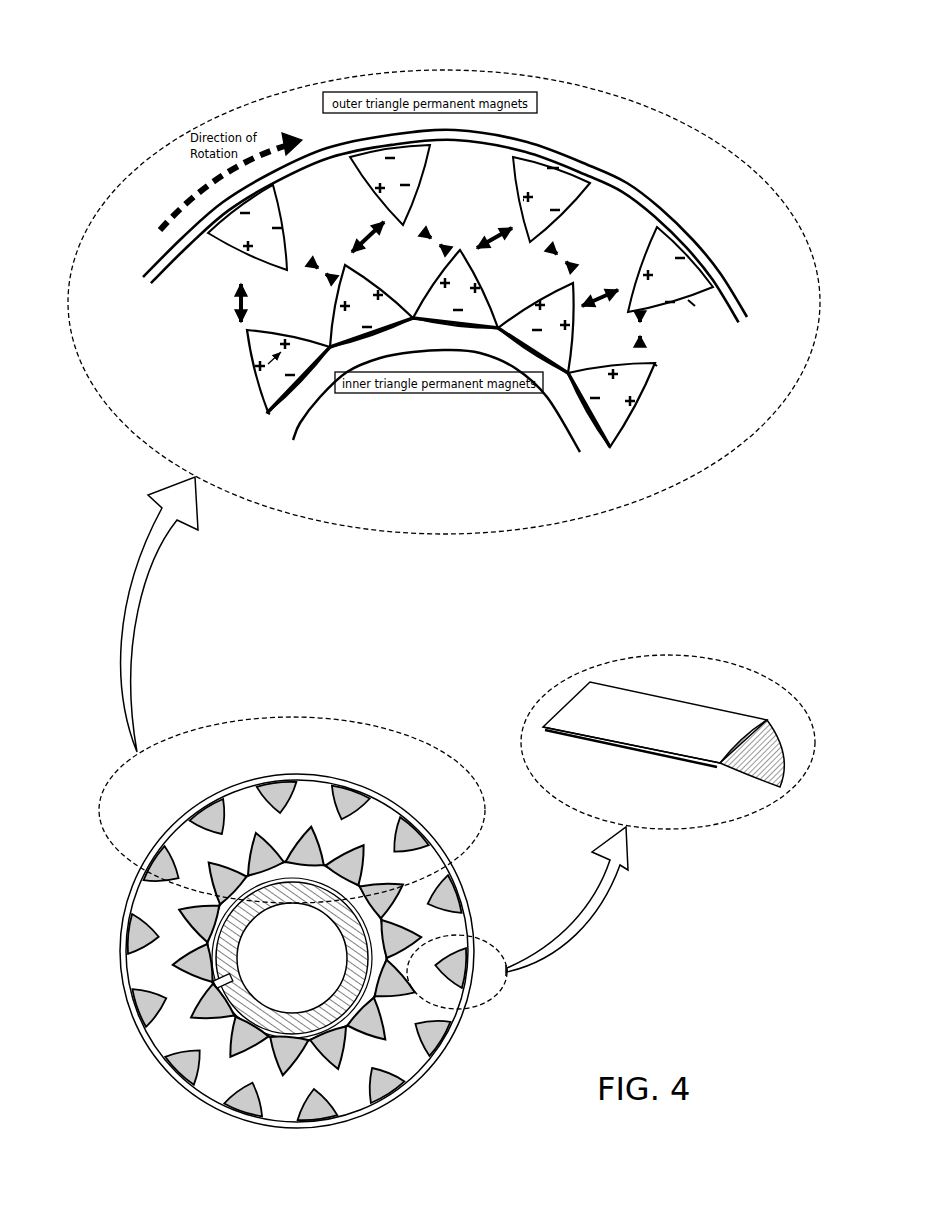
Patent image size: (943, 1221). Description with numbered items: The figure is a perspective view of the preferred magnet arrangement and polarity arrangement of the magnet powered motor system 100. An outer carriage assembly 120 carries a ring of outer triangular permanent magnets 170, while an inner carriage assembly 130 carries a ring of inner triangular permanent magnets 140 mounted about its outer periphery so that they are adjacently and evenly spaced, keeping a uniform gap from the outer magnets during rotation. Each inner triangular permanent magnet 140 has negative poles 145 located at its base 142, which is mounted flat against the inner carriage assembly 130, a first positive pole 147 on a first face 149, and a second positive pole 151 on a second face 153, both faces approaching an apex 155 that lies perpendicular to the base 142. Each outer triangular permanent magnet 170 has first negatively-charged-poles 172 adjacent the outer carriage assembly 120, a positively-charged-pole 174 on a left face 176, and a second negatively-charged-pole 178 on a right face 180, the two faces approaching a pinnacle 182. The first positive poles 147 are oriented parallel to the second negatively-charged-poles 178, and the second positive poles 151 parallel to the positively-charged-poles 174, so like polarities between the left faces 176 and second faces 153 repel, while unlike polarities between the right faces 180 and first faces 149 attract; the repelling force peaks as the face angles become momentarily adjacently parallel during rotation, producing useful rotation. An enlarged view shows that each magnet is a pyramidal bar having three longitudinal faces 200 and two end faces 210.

The magnet powered motor system 100 is at (207, 42).
The outer carriage assembly 120 is at (624, 180).
The inner carriage assembly 130 is at (563, 434).
The inner triangular permanent magnets 140 is at (122, 1086).
The base 142 is at (668, 248).
The negative poles 145 is at (287, 386).
The first positive pole 147 is at (249, 372).
The first face 149 is at (245, 356).
The second positive pole 151 is at (271, 415).
The second face 153 is at (647, 407).
The apex 155 is at (660, 369).
The outer triangular permanent magnets 170 is at (493, 1077).
The first negatively-charged-poles 172 is at (531, 183).
The positively-charged-pole 174 is at (553, 162).
The left face 176 is at (514, 200).
The second negatively-charged-pole 178 is at (672, 304).
The right face 180 is at (692, 303).
The pinnacle 182 is at (576, 368).
The longitudinal faces 200 is at (617, 702).
The end faces 210 is at (769, 771).